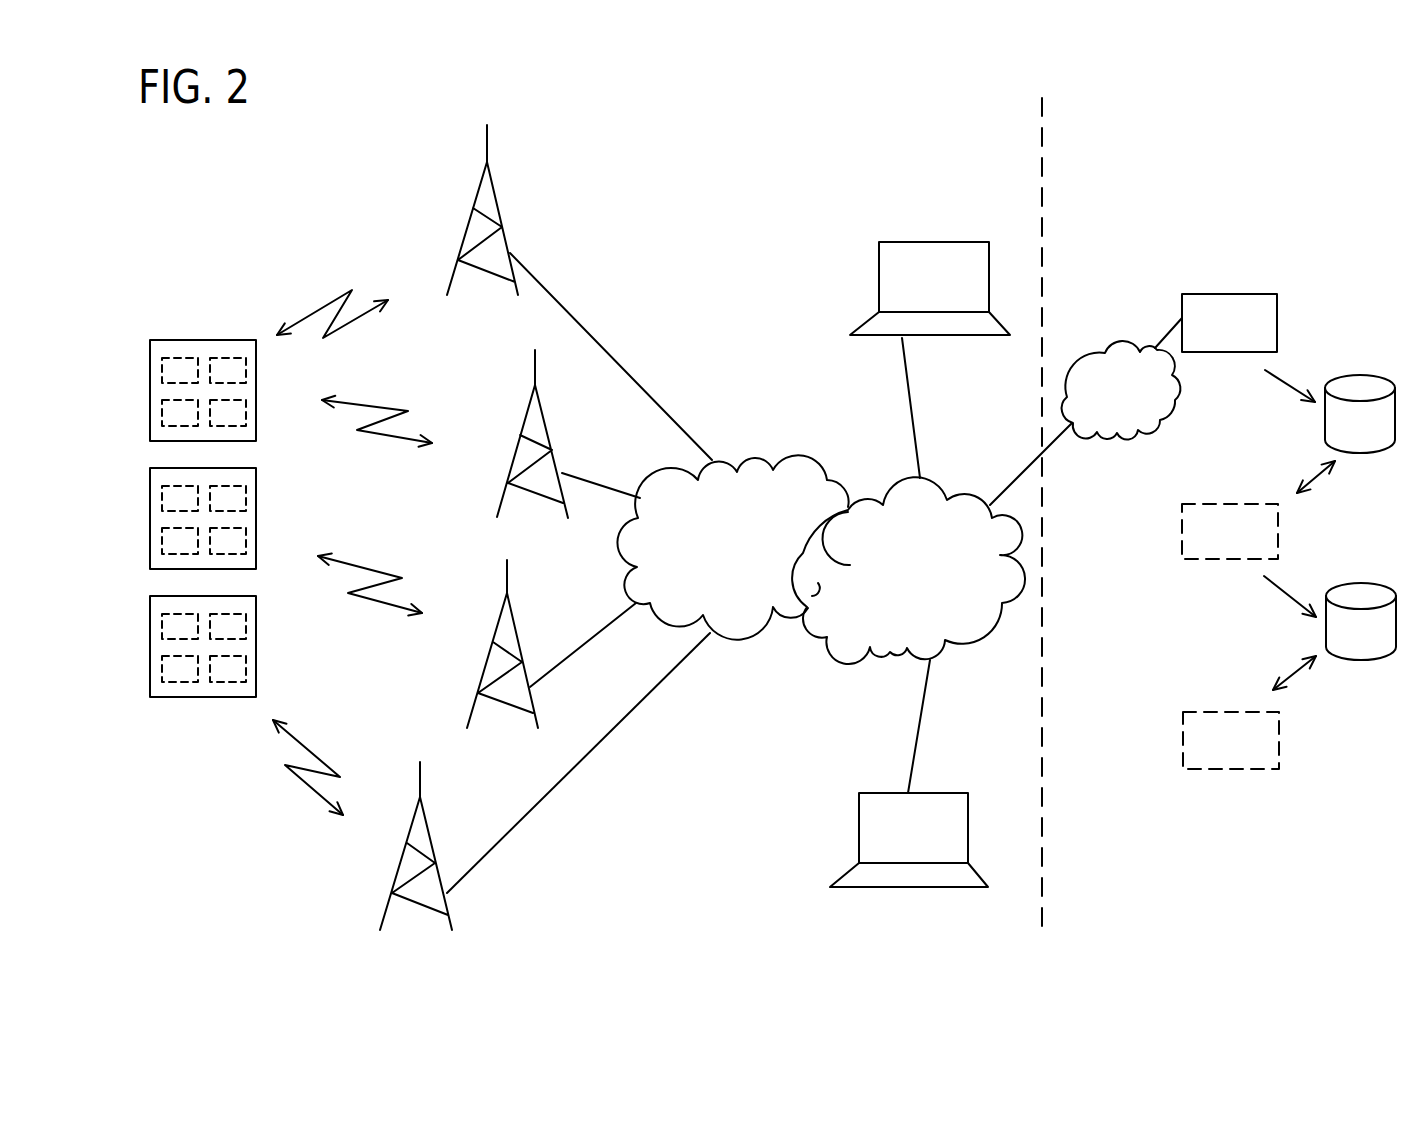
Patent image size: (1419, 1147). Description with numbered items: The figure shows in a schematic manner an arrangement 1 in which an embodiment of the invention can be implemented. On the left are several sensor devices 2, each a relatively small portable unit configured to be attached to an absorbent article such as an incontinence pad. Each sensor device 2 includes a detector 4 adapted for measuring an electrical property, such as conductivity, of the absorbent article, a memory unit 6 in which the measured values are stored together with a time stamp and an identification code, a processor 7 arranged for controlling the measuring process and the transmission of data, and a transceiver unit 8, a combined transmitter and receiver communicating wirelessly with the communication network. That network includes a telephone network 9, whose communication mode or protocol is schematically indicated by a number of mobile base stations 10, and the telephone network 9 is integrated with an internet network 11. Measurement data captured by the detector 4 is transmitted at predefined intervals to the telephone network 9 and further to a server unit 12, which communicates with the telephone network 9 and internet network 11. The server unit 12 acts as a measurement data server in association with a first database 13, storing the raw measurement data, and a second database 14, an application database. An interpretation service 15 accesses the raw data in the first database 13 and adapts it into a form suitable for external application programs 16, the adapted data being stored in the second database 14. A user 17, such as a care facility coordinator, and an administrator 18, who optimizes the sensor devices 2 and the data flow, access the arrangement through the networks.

The arrangement 1 is at (735, 187).
The sensor device 2 is at (259, 556).
The detector 4 is at (163, 630).
The memory unit 6 is at (232, 627).
The processor 7 is at (176, 680).
The transceiver unit 8 is at (242, 678).
The telephone network 9 is at (757, 620).
The mobile base station 10 is at (502, 210).
The internet network 11 is at (888, 652).
The server unit 12 is at (1232, 313).
The first database 13 is at (1370, 382).
The second database 14 is at (1372, 647).
The interpretation service 15 is at (1183, 540).
The external application programs 16 is at (1264, 771).
The user 17 is at (920, 870).
The administrator 18 is at (898, 262).